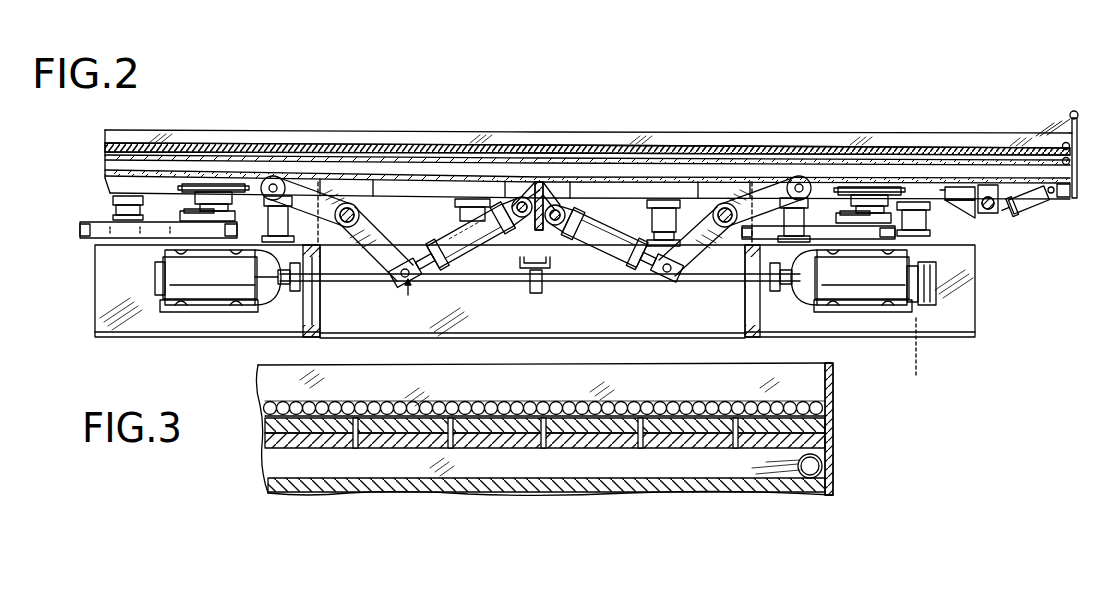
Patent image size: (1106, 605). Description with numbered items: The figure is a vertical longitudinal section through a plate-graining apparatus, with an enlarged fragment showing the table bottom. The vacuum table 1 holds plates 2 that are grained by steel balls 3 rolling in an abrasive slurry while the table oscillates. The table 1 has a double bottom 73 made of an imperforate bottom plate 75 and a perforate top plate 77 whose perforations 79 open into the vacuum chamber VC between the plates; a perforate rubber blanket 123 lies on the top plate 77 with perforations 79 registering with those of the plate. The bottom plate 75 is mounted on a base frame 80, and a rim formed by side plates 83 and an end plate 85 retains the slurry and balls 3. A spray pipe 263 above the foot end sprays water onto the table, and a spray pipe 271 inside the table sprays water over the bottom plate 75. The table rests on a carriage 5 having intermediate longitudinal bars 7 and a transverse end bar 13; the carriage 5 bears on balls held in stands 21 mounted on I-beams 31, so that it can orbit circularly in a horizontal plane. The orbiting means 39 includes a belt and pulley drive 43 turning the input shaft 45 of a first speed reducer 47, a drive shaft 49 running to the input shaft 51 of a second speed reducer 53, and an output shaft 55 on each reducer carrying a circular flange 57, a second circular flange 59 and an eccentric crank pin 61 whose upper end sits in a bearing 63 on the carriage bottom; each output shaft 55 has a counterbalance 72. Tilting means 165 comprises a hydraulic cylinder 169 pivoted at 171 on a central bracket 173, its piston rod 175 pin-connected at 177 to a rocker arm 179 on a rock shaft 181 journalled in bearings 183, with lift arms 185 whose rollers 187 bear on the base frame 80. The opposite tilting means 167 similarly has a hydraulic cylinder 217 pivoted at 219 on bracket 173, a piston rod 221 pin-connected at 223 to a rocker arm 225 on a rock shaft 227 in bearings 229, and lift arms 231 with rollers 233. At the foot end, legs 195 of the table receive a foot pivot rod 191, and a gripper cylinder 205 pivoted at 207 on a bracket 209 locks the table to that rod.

In FIG. 2, the vacuum table 1 is at (440, 126).
In FIG. 3, the plates 2 is at (266, 408).
In FIG. 3, the steel balls 3 is at (320, 402).
In FIG. 2, the carriage 5 is at (446, 208).
In FIG. 2, the intermediate longitudinal bars 7 is at (102, 192).
In FIG. 2, the end bar 13 is at (932, 188).
In FIG. 2, the stand 21 is at (648, 226).
In FIG. 2, the I-beams 31 is at (972, 298).
In FIG. 2, the means for circularly orbiting the carriage 39 is at (922, 380).
In FIG. 2, the belt and pulley drive 43 is at (929, 296).
In FIG. 2, the input shaft 45 is at (792, 278).
In FIG. 2, the first speed reducer 47 is at (866, 311).
In FIG. 2, the drive shaft 49 is at (556, 282).
In FIG. 2, the input shaft 51 is at (294, 278).
In FIG. 2, the speed reducer 53 is at (204, 312).
In FIG. 2, the output shaft 55 is at (203, 248).
In FIG. 2, the circular flange 57 is at (173, 225).
In FIG. 2, the circular flange 59 is at (232, 212).
In FIG. 2, the crank pin 61 is at (195, 202).
In FIG. 2, the bearing 63 is at (224, 186).
In FIG. 2, the counterbalance 72 is at (88, 220).
In FIG. 2, the double bottom 73 is at (711, 142).
In FIG. 2, the bottom plate 75 is at (642, 178).
In FIG. 3, the bottom plate 75 is at (272, 484).
In FIG. 2, the top plate 77 is at (596, 170).
In FIG. 3, the top plate 77 is at (270, 432).
In FIG. 2, the perforations 79 is at (532, 150).
In FIG. 3, the perforations 79 is at (357, 448).
In FIG. 2, the base frame 80 is at (104, 153).
In FIG. 2, the vertical plates 83 is at (919, 140).
In FIG. 3, the vertical plates 83 is at (446, 362).
In FIG. 2, the vertical plate 85 is at (1077, 136).
In FIG. 3, the vertical plate 85 is at (832, 412).
In FIG. 2, the perforate flexible cover or blanket 123 is at (488, 148).
In FIG. 3, the perforate flexible cover or blanket 123 is at (826, 439).
In FIG. 2, the means for tilting the table to ball-unloading position 165 is at (674, 275).
In FIG. 2, the means for tilting the table to ball-loading position 167 is at (406, 289).
In FIG. 2, the hydraulic cylinder 169 is at (596, 210).
In FIG. 2, the pivot 171 is at (557, 215).
In FIG. 2, the bracket 173 is at (533, 238).
In FIG. 2, the piston rod 175 is at (661, 260).
In FIG. 2, the pin connection 177 is at (665, 276).
In FIG. 2, the rocker arm 179 is at (676, 256).
In FIG. 2, the rock shaft 181 is at (706, 194).
In FIG. 2, the bearings 183 is at (720, 182).
In FIG. 2, the lift arms 185 is at (762, 210).
In FIG. 2, the rollers 187 is at (808, 181).
In FIG. 2, the table foot pivot rod 191 is at (991, 212).
In FIG. 2, the legs 195 is at (975, 187).
In FIG. 2, the hydraulic cylinder 205 is at (1032, 205).
In FIG. 2, the pivot 207 is at (1054, 195).
In FIG. 2, the bracket 209 is at (1070, 196).
In FIG. 2, the hydraulic cylinder 217 is at (458, 245).
In FIG. 2, the pivot 219 is at (514, 198).
In FIG. 2, the piston rod 221 is at (418, 276).
In FIG. 2, the pin connection 223 is at (392, 277).
In FIG. 2, the rocker arm 225 is at (374, 247).
In FIG. 2, the rock shaft 227 is at (373, 220).
In FIG. 2, the bearings 229 is at (370, 196).
In FIG. 2, the lift arms 231 is at (324, 194).
In FIG. 2, the rollers 233 is at (272, 182).
In FIG. 2, the spray pipe 263 is at (1071, 114).
In FIG. 2, the spray pipe 271 is at (1058, 144).
In FIG. 3, the spray pipe 271 is at (822, 468).
In FIG. 2, the vacuum chamber VC is at (333, 150).
In FIG. 3, the vacuum chamber VC is at (500, 470).